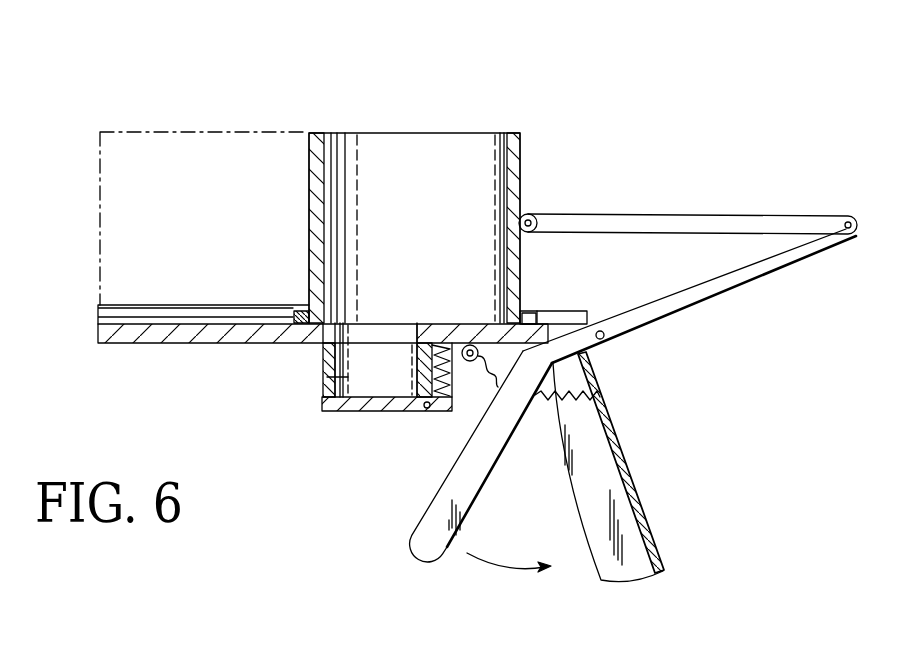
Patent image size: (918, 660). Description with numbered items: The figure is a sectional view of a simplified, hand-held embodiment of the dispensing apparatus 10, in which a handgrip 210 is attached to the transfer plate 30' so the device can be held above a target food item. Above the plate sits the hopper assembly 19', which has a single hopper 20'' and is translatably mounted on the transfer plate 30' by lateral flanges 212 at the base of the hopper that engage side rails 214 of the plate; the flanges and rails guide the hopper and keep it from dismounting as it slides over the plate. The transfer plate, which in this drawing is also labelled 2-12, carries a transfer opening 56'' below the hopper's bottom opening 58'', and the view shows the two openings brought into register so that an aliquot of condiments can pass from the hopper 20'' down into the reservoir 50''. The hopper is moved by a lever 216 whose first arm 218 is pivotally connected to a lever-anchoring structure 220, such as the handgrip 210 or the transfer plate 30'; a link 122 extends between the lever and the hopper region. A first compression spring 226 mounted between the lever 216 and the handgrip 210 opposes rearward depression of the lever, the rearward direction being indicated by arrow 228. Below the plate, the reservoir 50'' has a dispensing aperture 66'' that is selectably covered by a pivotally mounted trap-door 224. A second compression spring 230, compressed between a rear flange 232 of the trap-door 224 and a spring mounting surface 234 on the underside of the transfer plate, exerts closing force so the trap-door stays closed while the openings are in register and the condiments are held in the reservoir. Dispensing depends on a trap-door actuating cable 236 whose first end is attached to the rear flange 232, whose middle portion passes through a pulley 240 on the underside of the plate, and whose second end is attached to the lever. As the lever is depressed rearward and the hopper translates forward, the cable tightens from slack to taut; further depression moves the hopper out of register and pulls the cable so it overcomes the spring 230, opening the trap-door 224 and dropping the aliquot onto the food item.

The dispensing apparatus 10 is at (623, 103).
The hopper assembly 19' is at (414, 178).
The hopper 20'' is at (366, 202).
The transfer opening 56'' is at (363, 329).
The bottom opening 58'' is at (427, 329).
The side rails 214 is at (218, 305).
The lateral flanges 212 is at (297, 320).
The transfer plate 30' is at (323, 357).
The base plate 2-12 is at (256, 344).
The trap-door 224 is at (328, 406).
The reservoir 50'' is at (340, 386).
The dispensing aperture 66'' is at (382, 418).
The rear flange 232 is at (433, 412).
The spring mounting surface 234 is at (452, 385).
The second compression spring 230 is at (453, 327).
The trap-door actuating cable 236 is at (453, 378).
The pulley 240 is at (530, 315).
The lever-anchoring structure 220 is at (568, 328).
The top bar 122 is at (677, 221).
The first arm 218 is at (682, 302).
The lever 216 is at (473, 485).
The handgrip 210 is at (606, 465).
The first compression spring 226 is at (585, 396).
The arrow 228 is at (501, 566).